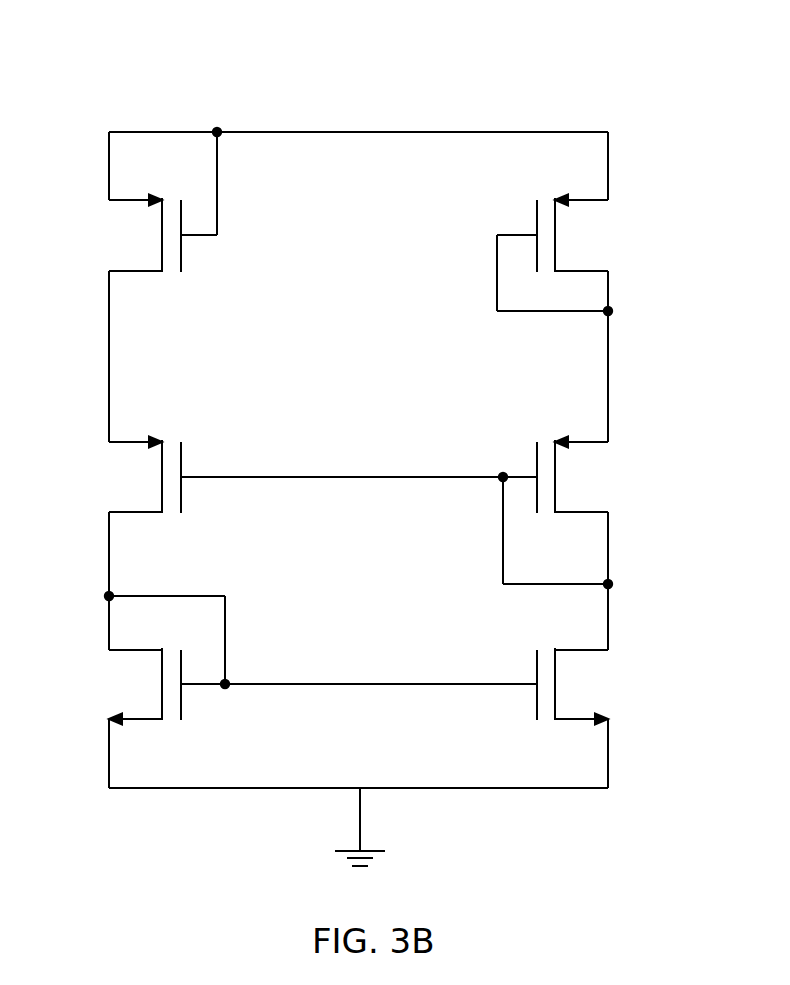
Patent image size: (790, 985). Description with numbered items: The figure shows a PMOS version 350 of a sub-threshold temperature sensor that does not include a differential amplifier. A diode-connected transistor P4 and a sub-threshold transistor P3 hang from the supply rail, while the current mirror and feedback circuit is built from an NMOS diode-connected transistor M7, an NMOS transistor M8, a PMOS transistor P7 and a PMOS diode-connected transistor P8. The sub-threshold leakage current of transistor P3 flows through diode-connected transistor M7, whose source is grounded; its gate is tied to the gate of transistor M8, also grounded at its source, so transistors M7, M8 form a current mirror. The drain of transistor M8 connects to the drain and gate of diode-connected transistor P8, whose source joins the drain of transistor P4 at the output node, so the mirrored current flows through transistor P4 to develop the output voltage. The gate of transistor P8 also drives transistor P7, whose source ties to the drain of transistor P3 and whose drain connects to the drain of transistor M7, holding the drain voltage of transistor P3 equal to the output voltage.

The PMOS version of temperature sensor 350 is at (392, 33).
The sub-threshold transistor P3 is at (126, 234).
The diode-connected transistor P4 is at (590, 234).
The PMOS transistor P7 is at (126, 475).
The PMOS diode-connected transistor P8 is at (590, 475).
The NMOS diode-connected transistor M7 is at (124, 686).
The NMOS transistor M8 is at (593, 686).